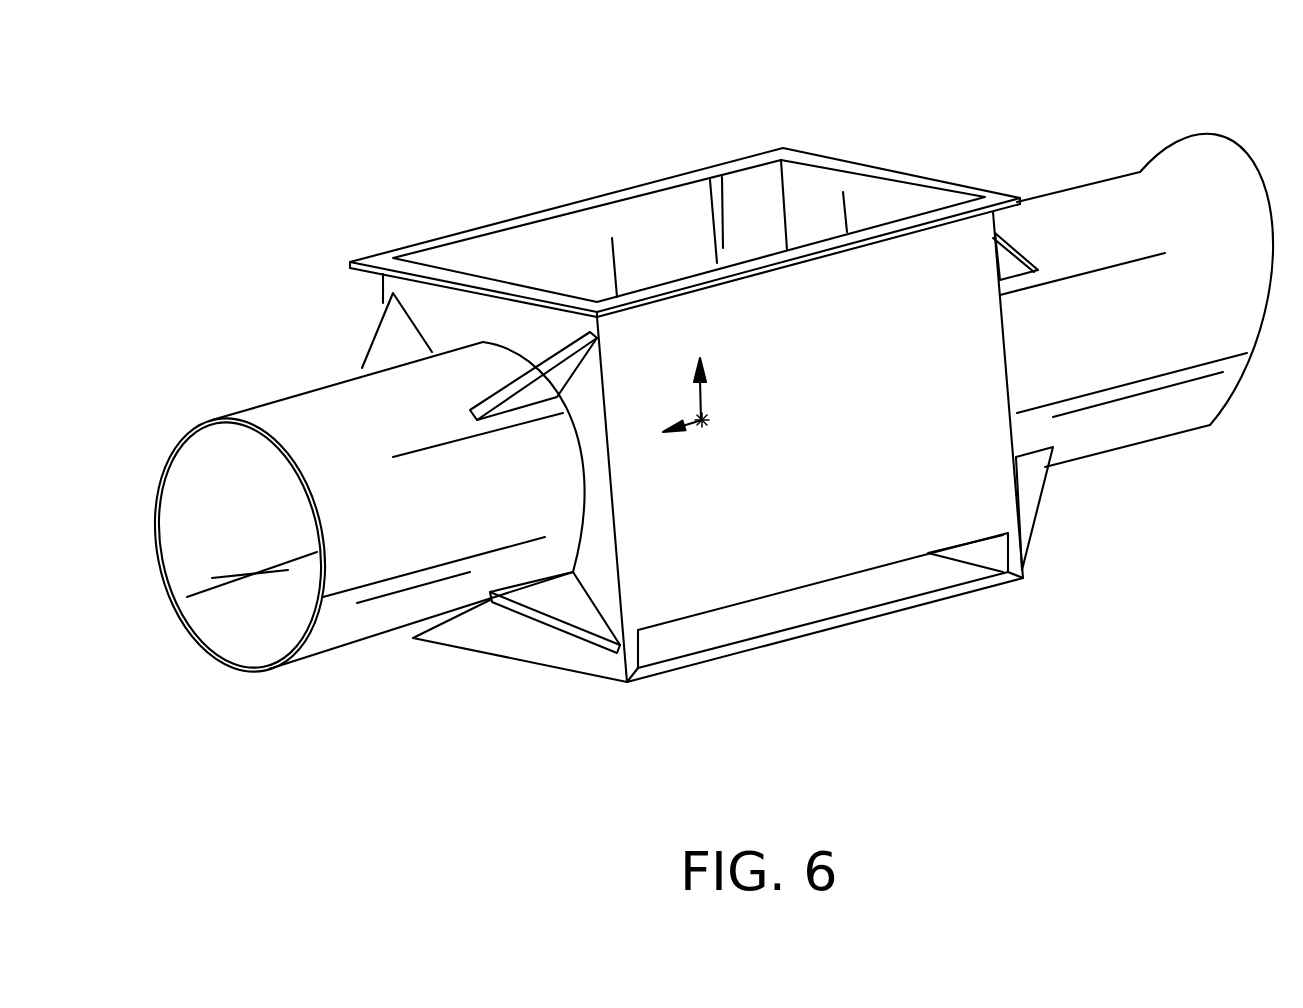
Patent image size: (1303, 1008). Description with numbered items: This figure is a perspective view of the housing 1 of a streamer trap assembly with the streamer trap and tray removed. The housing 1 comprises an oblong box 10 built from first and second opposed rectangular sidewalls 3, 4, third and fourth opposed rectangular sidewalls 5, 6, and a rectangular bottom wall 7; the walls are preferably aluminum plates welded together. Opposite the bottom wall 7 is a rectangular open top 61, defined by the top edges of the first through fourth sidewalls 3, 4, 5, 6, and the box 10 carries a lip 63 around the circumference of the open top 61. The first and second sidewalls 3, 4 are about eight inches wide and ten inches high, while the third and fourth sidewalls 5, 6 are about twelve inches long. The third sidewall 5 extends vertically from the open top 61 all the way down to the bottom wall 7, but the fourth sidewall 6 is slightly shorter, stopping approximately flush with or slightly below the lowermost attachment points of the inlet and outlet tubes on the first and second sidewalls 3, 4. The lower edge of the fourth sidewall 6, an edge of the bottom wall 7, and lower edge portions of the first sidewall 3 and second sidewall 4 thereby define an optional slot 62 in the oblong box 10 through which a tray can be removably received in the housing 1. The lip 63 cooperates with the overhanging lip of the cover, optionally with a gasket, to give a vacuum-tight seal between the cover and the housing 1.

The housing 1 is at (458, 687).
The first sidewall 3 is at (430, 300).
The second sidewall 4 is at (997, 220).
The third sidewall 5 is at (512, 263).
The fourth sidewall 6 is at (643, 603).
The bottom wall 7 is at (965, 595).
The oblong box 10 is at (804, 440).
The open top 61 is at (678, 220).
The slot 62 is at (744, 620).
The lip 63 is at (885, 175).